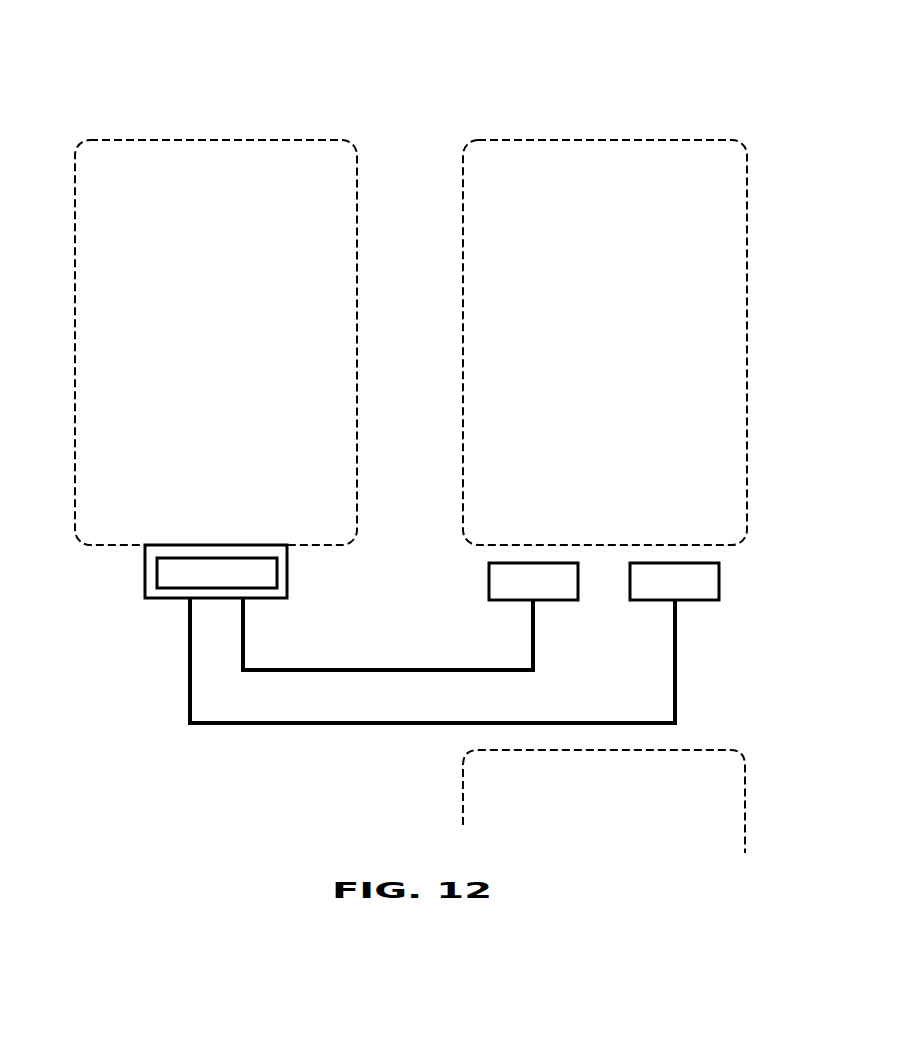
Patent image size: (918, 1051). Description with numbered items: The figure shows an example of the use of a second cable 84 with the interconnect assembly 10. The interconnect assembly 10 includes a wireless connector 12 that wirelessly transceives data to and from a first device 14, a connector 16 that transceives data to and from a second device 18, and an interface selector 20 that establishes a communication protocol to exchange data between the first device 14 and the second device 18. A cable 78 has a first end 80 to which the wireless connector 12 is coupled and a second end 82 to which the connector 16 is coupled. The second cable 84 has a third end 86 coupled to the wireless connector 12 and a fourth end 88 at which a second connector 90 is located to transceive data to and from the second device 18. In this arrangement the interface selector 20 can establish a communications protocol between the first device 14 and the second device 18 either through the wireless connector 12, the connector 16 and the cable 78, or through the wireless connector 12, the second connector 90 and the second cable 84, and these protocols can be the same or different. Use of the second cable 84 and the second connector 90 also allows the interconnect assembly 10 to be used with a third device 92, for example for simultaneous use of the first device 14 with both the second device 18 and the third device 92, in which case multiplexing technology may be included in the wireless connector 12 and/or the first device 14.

The interconnect assembly 10 is at (496, 83).
The wireless connector 12 is at (287, 573).
The first device 14 is at (218, 138).
The connector 16 is at (488, 582).
The second device 18 is at (607, 138).
The interface selector 20 is at (218, 556).
The cable 78 is at (390, 668).
The first end 80 is at (246, 619).
The second end 82 is at (530, 620).
The second cable 84 is at (605, 720).
The third end 86 is at (188, 619).
The fourth end 88 is at (678, 620).
The second connector 90 is at (720, 573).
The third device 92 is at (698, 750).